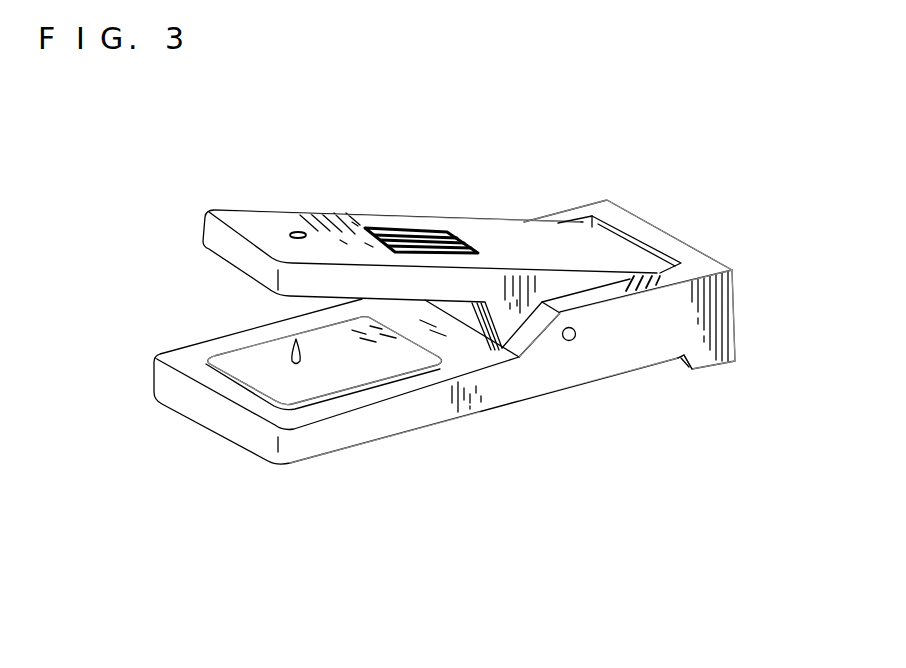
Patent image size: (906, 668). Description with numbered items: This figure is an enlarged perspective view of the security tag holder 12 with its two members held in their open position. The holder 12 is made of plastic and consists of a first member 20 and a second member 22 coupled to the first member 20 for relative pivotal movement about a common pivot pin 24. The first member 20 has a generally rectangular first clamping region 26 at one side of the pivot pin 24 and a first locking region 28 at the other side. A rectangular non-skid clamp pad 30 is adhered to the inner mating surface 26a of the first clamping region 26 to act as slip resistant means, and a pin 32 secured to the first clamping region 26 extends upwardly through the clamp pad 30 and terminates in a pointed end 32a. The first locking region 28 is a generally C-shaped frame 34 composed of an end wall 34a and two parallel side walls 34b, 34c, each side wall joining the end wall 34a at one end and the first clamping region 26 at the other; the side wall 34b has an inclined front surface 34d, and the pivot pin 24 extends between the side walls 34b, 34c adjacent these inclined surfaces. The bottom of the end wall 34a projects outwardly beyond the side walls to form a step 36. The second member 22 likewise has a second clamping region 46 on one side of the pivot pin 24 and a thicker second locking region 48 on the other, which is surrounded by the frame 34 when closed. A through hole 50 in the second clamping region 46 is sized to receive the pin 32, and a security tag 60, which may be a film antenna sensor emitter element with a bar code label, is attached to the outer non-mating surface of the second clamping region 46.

The security tag holder 12 is at (399, 486).
The first member 20 is at (165, 382).
The second member 22 is at (214, 238).
The pivot pin 24 is at (569, 341).
The first clamping region 26 is at (426, 402).
The mating surface 26a is at (230, 388).
The first locking region 28 is at (630, 218).
The clamp pad 30 is at (277, 388).
The pin 32 is at (301, 362).
The pointed end 32a is at (291, 343).
The C-shaped frame 34 is at (698, 262).
The end wall 34a is at (677, 248).
The side wall 34b is at (640, 288).
The side wall 34c is at (573, 215).
The inclined front surface 34d is at (533, 332).
The step 36 is at (683, 370).
The second clamping region 46 is at (240, 228).
The second locking region 48 is at (548, 287).
The through hole 50 is at (295, 229).
The security tag 60 is at (418, 228).